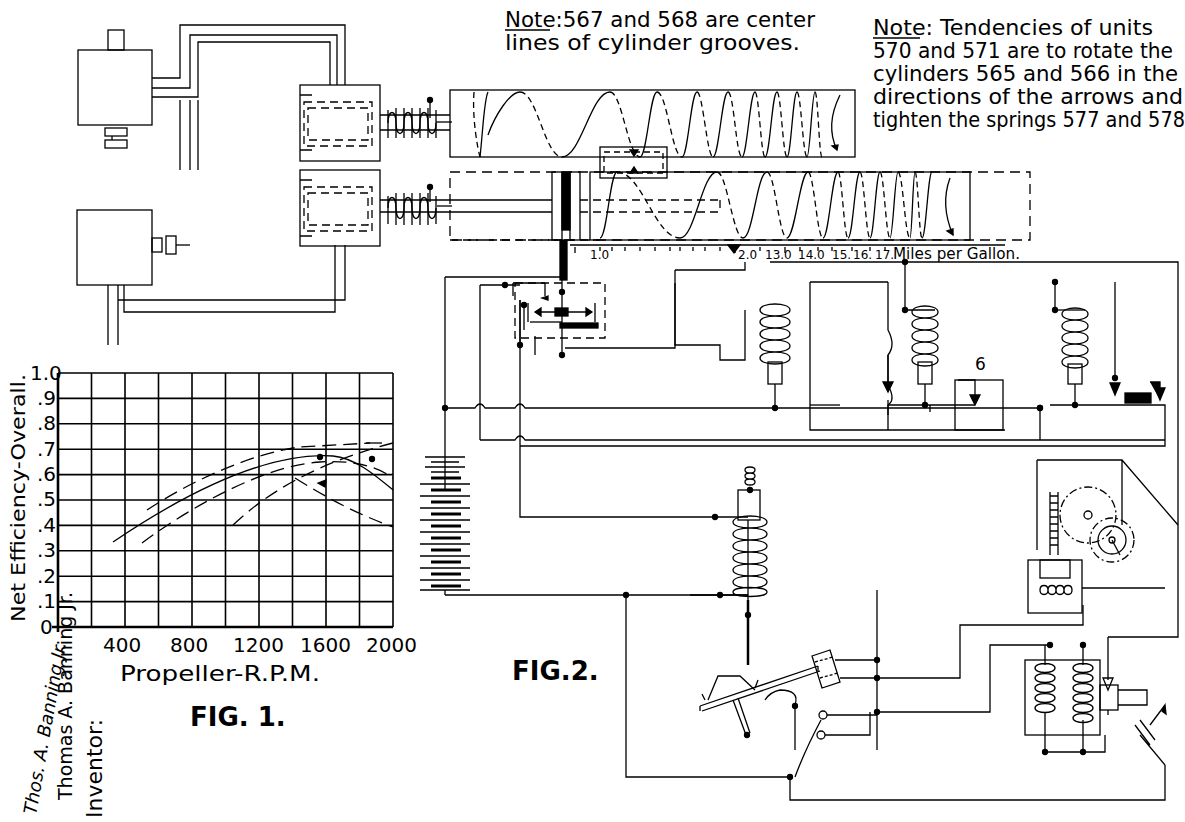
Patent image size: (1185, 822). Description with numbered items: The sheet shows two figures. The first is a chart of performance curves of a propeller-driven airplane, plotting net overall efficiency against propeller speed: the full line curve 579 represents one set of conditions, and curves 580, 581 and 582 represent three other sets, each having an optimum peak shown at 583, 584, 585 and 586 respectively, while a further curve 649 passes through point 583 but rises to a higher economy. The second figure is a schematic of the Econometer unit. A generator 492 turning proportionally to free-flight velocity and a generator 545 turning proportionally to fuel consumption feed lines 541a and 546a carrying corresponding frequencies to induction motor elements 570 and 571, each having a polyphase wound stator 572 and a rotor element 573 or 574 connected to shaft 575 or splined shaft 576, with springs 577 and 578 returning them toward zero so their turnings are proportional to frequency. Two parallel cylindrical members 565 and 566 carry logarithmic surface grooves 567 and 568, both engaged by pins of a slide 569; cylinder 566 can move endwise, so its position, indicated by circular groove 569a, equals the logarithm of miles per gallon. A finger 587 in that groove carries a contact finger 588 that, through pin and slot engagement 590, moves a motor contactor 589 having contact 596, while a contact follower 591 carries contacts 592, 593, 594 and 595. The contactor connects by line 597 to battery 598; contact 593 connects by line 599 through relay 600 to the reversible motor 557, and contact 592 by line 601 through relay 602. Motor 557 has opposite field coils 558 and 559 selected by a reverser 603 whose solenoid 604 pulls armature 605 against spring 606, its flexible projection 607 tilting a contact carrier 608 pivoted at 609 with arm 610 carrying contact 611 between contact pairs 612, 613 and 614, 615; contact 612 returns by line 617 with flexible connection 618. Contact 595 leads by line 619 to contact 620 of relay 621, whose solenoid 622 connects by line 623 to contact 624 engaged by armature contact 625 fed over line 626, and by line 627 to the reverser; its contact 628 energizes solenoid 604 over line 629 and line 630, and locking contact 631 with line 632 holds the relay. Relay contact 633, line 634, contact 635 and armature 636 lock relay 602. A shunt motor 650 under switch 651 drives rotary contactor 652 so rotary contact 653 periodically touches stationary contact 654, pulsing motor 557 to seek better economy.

In FIG. 2, the generator 492 is at (73, 93).
In FIG. 2, the line 541a is at (192, 115).
In FIG. 2, the generator 545 is at (73, 244).
In FIG. 2, the line 546a is at (125, 330).
In FIG. 2, the reversible motor 557 is at (1025, 740).
In FIG. 2, the field coil 558 is at (1035, 710).
In FIG. 2, the field coil 559 is at (1075, 725).
In FIG. 2, the cylindrical member 565 is at (858, 62).
In FIG. 2, the cylindrical member 566 is at (955, 88).
In FIG. 2, the surface groove 567 is at (650, 105).
In FIG. 2, the surface groove 568 is at (848, 185).
In FIG. 2, the slide 569 is at (605, 150).
In FIG. 2, the circular groove 569a is at (555, 222).
In FIG. 2, the induction motor element 570 is at (355, 80).
In FIG. 2, the induction motor element 571 is at (305, 250).
In FIG. 2, the polyphase wound stator 572 is at (296, 92).
In FIG. 2, the rotor element 573 is at (310, 140).
In FIG. 2, the rotor element 574 is at (310, 213).
In FIG. 2, the shaft 575 is at (440, 118).
In FIG. 2, the shaft 576 is at (440, 222).
In FIG. 2, the spring 577 is at (400, 108).
In FIG. 2, the spring 578 is at (405, 188).
In FIG. 1, the performance curve 579 is at (288, 452).
In FIG. 1, the performance curve 580 is at (242, 452).
In FIG. 1, the performance curve 581 is at (220, 482).
In FIG. 1, the performance curve 582 is at (226, 535).
In FIG. 1, the peak 583 is at (322, 470).
In FIG. 1, the peak 584 is at (320, 457).
In FIG. 1, the peak 585 is at (325, 483).
In FIG. 1, the peak 586 is at (372, 459).
In FIG. 2, the finger 587 is at (552, 245).
In FIG. 2, the motor circuit closing contact finger 588 is at (575, 290).
In FIG. 2, the motor contactor 589 is at (566, 335).
In FIG. 2, the pin and slot engagement 590 is at (565, 312).
In FIG. 2, the contact follower 591 is at (537, 355).
In FIG. 2, the contact 592 is at (518, 342).
In FIG. 2, the contact 593 is at (600, 313).
In FIG. 2, the contact 594 is at (522, 310).
In FIG. 2, the contact 595 is at (535, 294).
In FIG. 2, the contact 596 is at (553, 290).
In FIG. 2, the line 597 is at (445, 332).
In FIG. 2, the battery 598 is at (478, 530).
In FIG. 2, the line 599 is at (705, 350).
In FIG. 2, the relay 600 is at (765, 308).
In FIG. 2, the line 601 is at (628, 352).
In FIG. 2, the relay 602 is at (940, 325).
In FIG. 2, the reverser 603 is at (778, 595).
In FIG. 2, the solenoid 604 is at (768, 526).
In FIG. 2, the armature 605 is at (760, 500).
In FIG. 2, the spring 606 is at (756, 480).
In FIG. 2, the flexible projection 607 is at (745, 648).
In FIG. 2, the contact carrier 608 is at (728, 715).
In FIG. 2, the pivot 609 is at (748, 740).
In FIG. 2, the arm 610 is at (784, 678).
In FIG. 2, the contact 611 is at (805, 650).
In FIG. 2, the contact 612 is at (828, 655).
In FIG. 2, the contact 613 is at (828, 684).
In FIG. 2, the contact 614 is at (833, 750).
In FIG. 2, the contact 615 is at (825, 740).
In FIG. 2, the line 617 is at (540, 600).
In FIG. 2, the flexible connection 618 is at (775, 720).
In FIG. 2, the line 619 is at (480, 335).
In FIG. 2, the contact 620 is at (1158, 365).
In FIG. 2, the relay 621 is at (1058, 317).
In FIG. 2, the solenoid 622 is at (1060, 342).
In FIG. 2, the line 623 is at (1010, 300).
In FIG. 2, the contact 624 is at (862, 395).
In FIG. 2, the armature contact 625 is at (820, 405).
In FIG. 2, the line 626 is at (670, 406).
In FIG. 2, the line 627 is at (970, 548).
In FIG. 2, the contact 628 is at (1135, 392).
In FIG. 2, the line 629 is at (1128, 445).
In FIG. 2, the line 630 is at (685, 575).
In FIG. 2, the locking contact 631 is at (1100, 375).
In FIG. 2, the line 632 is at (755, 428).
In FIG. 2, the contact 633 is at (1055, 423).
In FIG. 2, the line 634 is at (883, 430).
In FIG. 2, the contact 635 is at (958, 393).
In FIG. 2, the armature 636 is at (925, 408).
In FIG. 1, the performance curve 649 is at (378, 442).
In FIG. 2, the shunt motor 650 is at (1025, 575).
In FIG. 2, the switch 651 is at (1150, 750).
In FIG. 2, the rotary contactor 652 is at (1120, 520).
In FIG. 2, the rotary contact 653 is at (1112, 565).
In FIG. 2, the stationary contact 654 is at (1135, 543).